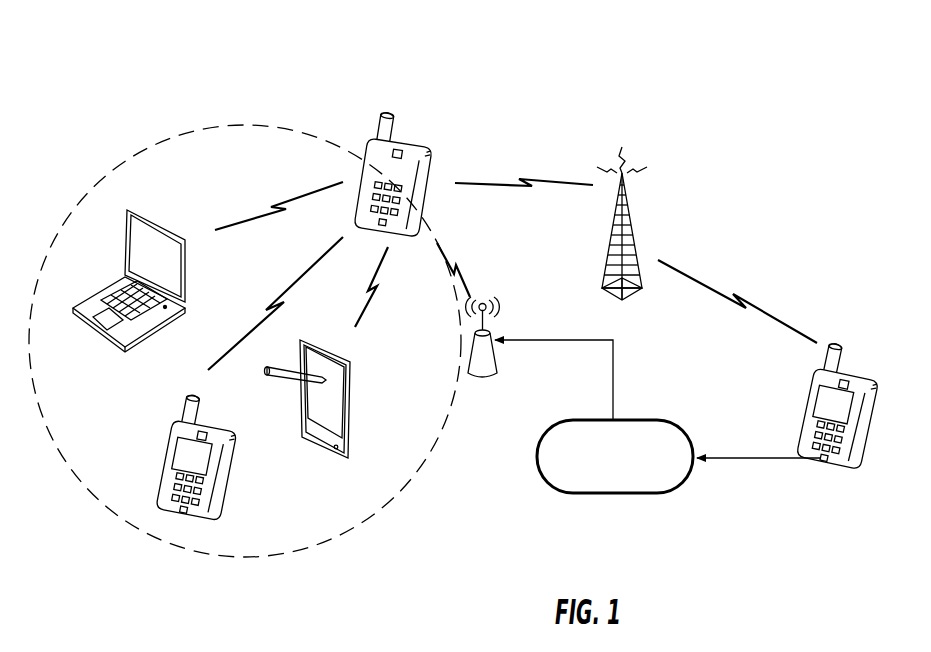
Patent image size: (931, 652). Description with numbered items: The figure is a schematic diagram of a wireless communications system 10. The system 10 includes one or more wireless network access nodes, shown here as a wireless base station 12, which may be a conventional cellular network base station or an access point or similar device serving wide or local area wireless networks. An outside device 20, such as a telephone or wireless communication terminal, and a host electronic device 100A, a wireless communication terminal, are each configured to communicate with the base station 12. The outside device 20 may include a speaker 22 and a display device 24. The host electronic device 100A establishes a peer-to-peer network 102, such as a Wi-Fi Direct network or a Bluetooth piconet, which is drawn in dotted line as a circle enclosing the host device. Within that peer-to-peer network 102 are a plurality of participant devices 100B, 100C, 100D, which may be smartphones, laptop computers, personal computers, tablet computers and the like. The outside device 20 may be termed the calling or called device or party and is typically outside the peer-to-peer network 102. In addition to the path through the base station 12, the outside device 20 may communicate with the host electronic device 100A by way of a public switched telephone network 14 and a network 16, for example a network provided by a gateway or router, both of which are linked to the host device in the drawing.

The wireless communications system 10 is at (628, 92).
The wireless base station 12 is at (652, 217).
The public switched telephone network 14 is at (603, 487).
The network 16 is at (482, 388).
The outside device 20 is at (817, 358).
The speaker 22 is at (845, 380).
The display device 24 is at (826, 393).
The host electronic device 100A is at (408, 122).
The participant device 100B is at (175, 517).
The participant device 100C is at (310, 487).
The participant device 100D is at (97, 265).
The peer-to-peer network 102 is at (73, 480).